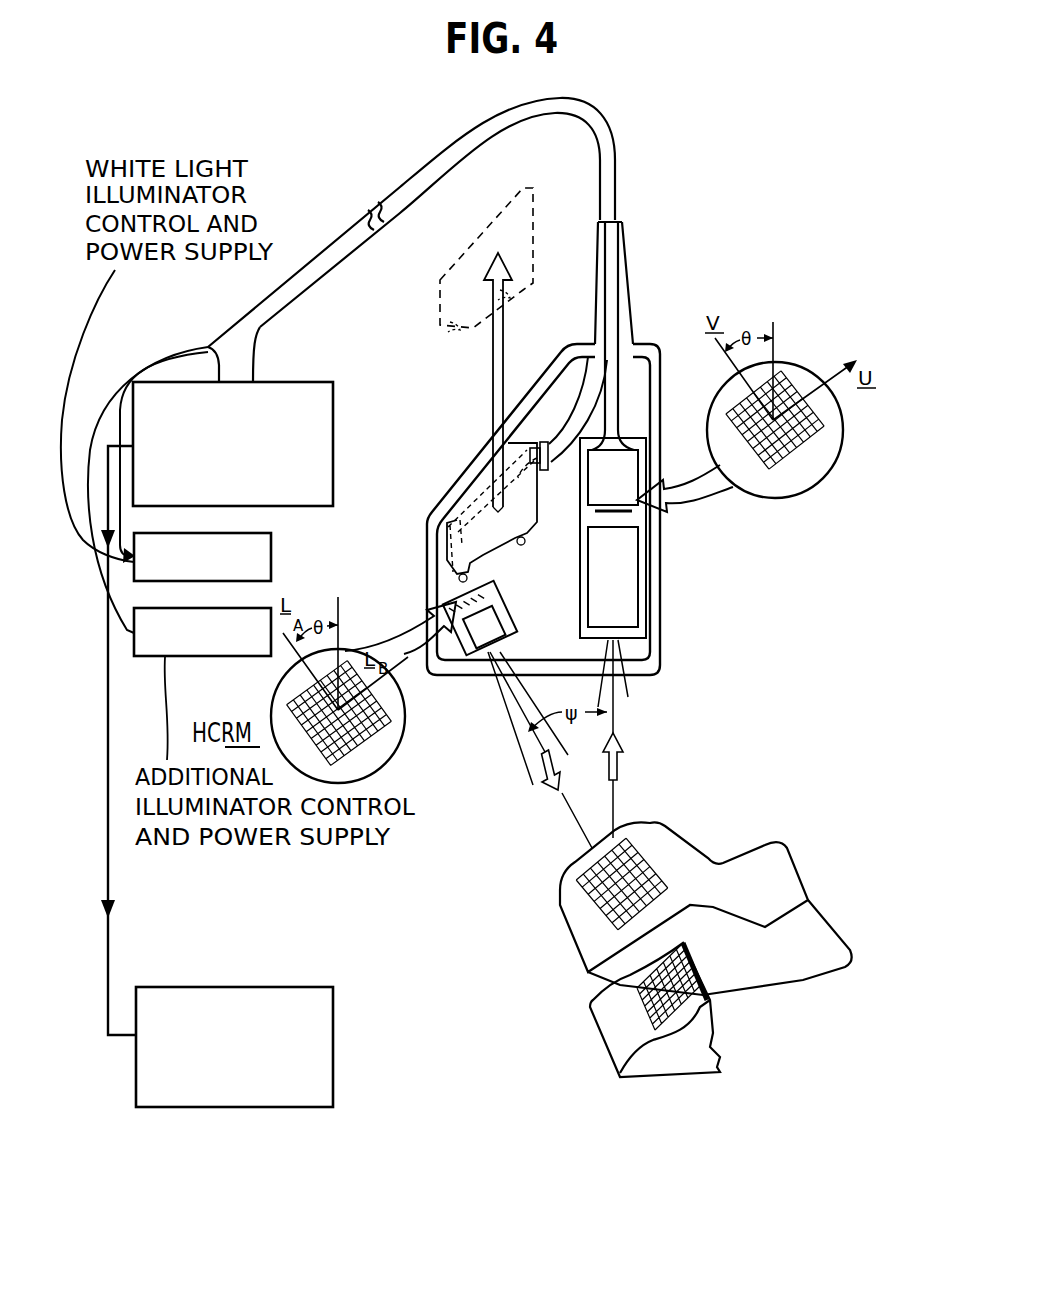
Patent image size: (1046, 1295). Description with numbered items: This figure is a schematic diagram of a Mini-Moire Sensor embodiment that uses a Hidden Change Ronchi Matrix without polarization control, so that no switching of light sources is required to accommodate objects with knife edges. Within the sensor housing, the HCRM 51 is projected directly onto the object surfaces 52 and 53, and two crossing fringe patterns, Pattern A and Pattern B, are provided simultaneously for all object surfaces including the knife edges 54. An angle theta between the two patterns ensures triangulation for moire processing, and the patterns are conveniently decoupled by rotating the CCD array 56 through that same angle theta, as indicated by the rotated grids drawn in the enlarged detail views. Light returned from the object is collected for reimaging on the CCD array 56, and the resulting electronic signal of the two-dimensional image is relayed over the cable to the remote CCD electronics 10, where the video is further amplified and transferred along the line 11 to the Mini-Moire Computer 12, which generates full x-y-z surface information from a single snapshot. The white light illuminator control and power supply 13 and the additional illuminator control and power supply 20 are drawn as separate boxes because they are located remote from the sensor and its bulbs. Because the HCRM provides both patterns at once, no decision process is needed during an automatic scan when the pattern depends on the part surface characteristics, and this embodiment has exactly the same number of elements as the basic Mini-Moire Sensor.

The remote CCD electronics 10 is at (293, 392).
The signal line to computer 11 is at (109, 840).
The mini-moire computer 12 is at (333, 1010).
The white light illuminator control and power supply 13 is at (271, 565).
The illuminator control and power supply 20 is at (238, 657).
The Hidden Change Ronchi Matrix 51 is at (446, 606).
The object surface 52 is at (577, 932).
The object surface 53 is at (613, 1027).
The knife edge 54 is at (707, 993).
The CCD array 56 is at (642, 513).